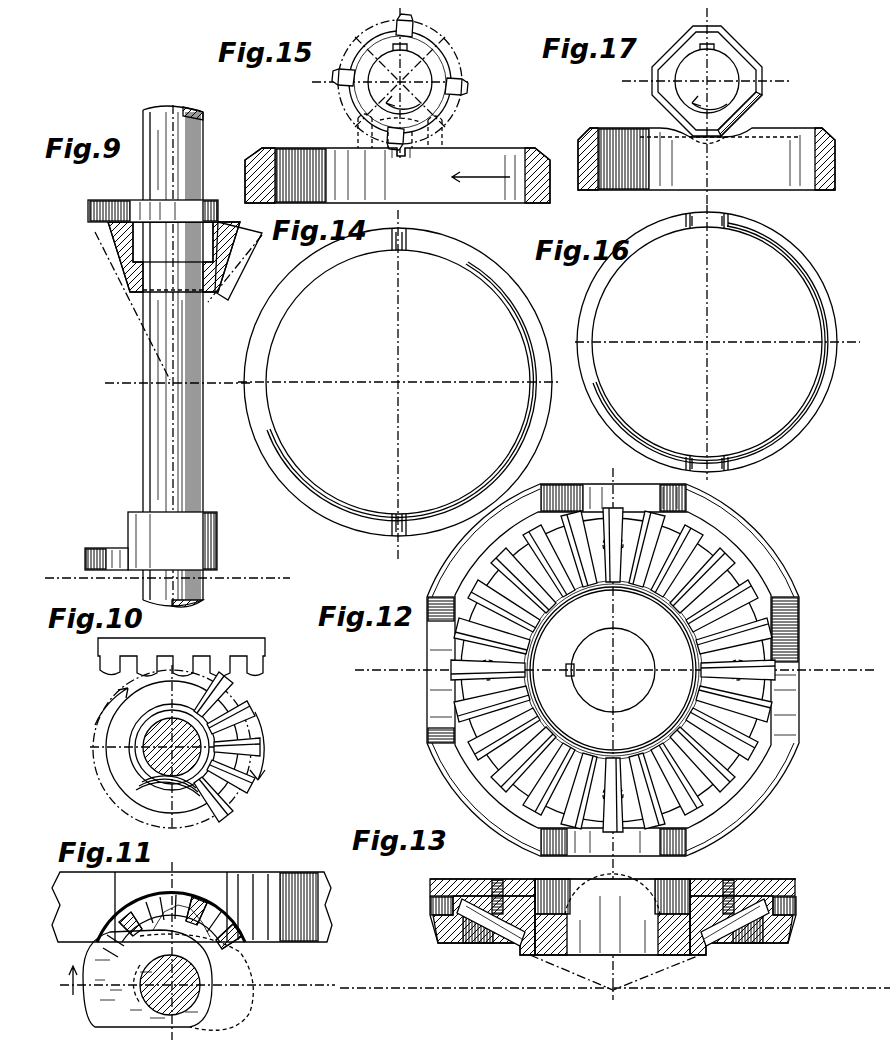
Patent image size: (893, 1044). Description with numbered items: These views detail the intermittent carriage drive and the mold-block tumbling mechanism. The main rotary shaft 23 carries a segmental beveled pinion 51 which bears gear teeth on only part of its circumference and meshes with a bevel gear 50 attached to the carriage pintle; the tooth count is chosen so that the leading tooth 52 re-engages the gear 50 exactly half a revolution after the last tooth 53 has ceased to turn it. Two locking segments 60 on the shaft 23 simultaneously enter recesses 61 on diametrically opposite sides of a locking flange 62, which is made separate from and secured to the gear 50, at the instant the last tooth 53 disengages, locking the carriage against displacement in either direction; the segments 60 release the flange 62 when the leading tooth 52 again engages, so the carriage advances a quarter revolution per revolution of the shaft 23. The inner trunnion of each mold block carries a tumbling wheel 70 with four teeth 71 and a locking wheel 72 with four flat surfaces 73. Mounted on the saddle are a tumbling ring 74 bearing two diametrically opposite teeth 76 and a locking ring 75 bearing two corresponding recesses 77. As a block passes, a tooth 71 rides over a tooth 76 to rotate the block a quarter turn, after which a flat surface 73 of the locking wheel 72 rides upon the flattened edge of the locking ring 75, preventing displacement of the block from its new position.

In FIG. 9, the main rotary shaft 23 is at (203, 470).
In FIG. 10, the bevel gear 50 is at (262, 664).
In FIG. 11, the bevel gear 50 is at (198, 934).
In FIG. 12, the bevel gear 50 is at (613, 670).
In FIG. 13, the bevel gear 50 is at (498, 946).
In FIG. 10, the segmental beveled pinion 51 is at (106, 752).
In FIG. 10, the leading tooth 52 is at (228, 816).
In FIG. 10, the last tooth 53 is at (240, 692).
In FIG. 9, the locking segment 60 is at (92, 206).
In FIG. 11, the locking segment 60 is at (197, 951).
In FIG. 11, the recess 61 is at (118, 914).
In FIG. 12, the recess 61 is at (612, 492).
In FIG. 13, the recess 61 is at (432, 934).
In FIG. 12, the locking flange 62 is at (455, 762).
In FIG. 13, the locking flange 62 is at (430, 882).
In FIG. 15, the tumbling wheel 70 is at (440, 58).
In FIG. 15, the tooth 71 is at (462, 86).
In FIG. 17, the locking wheel 72 is at (745, 72).
In FIG. 17, the flat surface 73 is at (724, 50).
In FIG. 15, the tumbling ring 74 is at (270, 150).
In FIG. 14, the tumbling ring 74 is at (407, 385).
In FIG. 16, the locking ring 75 is at (790, 262).
In FIG. 17, the locking ring 75 is at (582, 140).
In FIG. 15, the tooth 76 is at (456, 140).
In FIG. 14, the tooth 76 is at (410, 229).
In FIG. 16, the recess 77 is at (732, 216).
In FIG. 17, the recess 77 is at (730, 135).